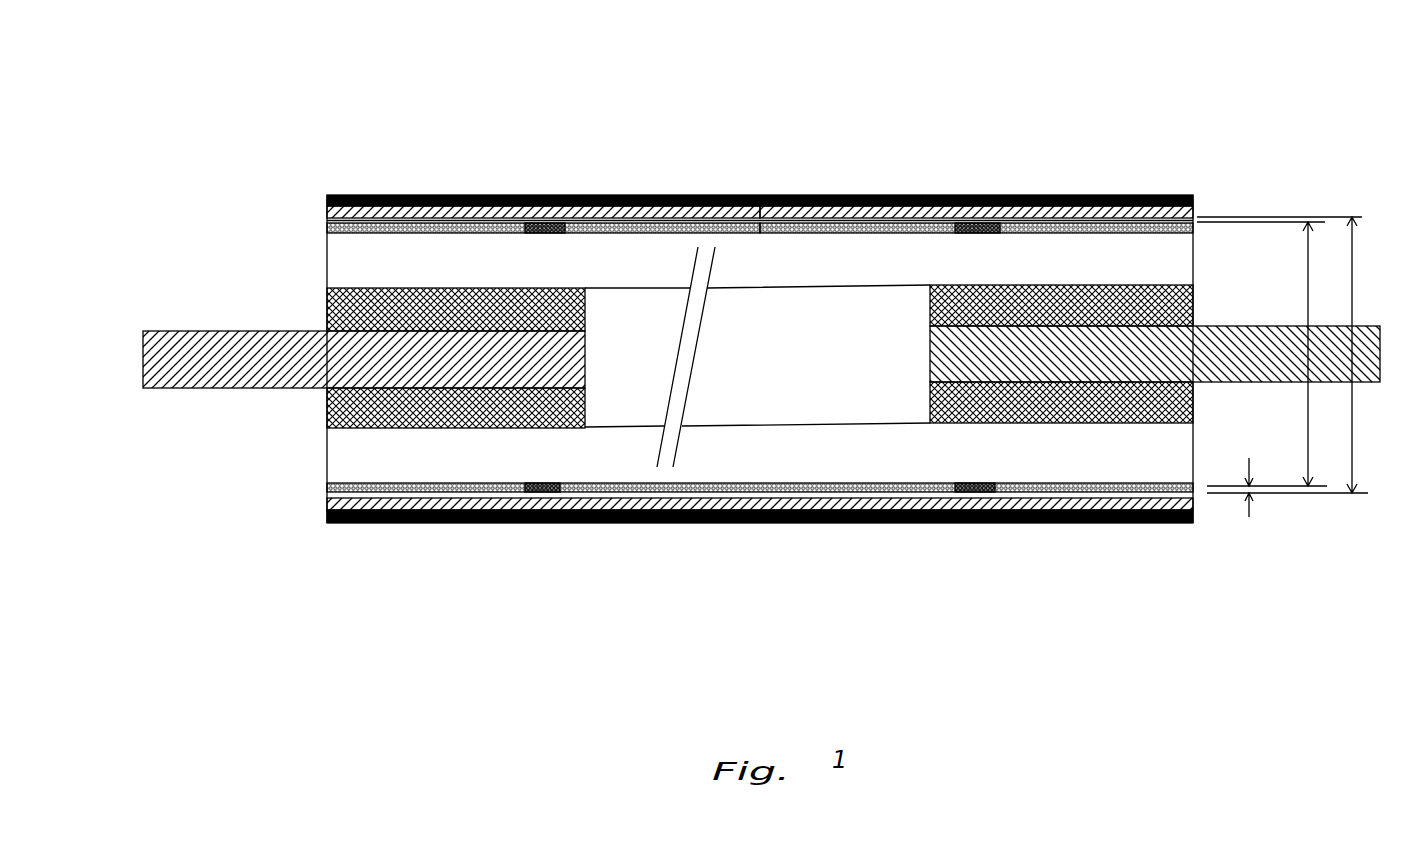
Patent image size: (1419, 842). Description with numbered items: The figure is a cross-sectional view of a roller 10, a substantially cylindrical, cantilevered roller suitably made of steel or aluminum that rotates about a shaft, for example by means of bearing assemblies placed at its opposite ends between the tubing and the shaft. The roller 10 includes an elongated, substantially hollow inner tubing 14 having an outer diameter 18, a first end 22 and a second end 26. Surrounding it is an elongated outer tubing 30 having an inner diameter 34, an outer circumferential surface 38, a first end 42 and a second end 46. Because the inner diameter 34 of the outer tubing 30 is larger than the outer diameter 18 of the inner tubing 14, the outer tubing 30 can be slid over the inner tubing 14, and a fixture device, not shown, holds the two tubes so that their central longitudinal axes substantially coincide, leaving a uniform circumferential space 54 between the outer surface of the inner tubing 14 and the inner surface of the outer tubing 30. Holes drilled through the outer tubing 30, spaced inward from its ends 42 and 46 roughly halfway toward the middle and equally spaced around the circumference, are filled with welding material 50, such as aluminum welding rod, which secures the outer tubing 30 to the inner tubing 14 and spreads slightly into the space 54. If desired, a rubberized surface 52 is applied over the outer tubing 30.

The roller 10 is at (1238, 135).
The inner tubing 14 is at (905, 233).
The outer diameter 18 is at (1307, 292).
The first end 22 is at (324, 233).
The second end 26 is at (1193, 225).
The outer tubing 30 is at (328, 506).
The inner diameter 34 is at (1352, 290).
The outer circumferential surface 38 is at (324, 213).
The first end 42 is at (324, 221).
The second end 46 is at (1193, 212).
The welding material 50 is at (545, 233).
The rubberized surface 52 is at (852, 197).
The circumferential space 54 is at (1249, 517).